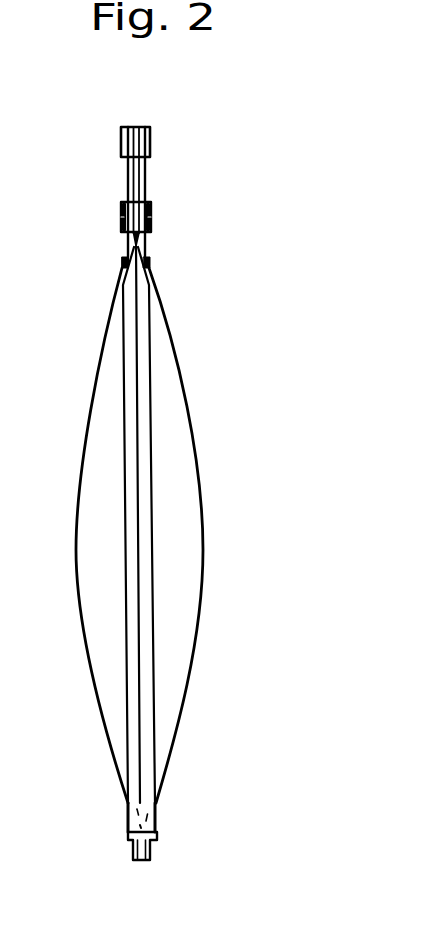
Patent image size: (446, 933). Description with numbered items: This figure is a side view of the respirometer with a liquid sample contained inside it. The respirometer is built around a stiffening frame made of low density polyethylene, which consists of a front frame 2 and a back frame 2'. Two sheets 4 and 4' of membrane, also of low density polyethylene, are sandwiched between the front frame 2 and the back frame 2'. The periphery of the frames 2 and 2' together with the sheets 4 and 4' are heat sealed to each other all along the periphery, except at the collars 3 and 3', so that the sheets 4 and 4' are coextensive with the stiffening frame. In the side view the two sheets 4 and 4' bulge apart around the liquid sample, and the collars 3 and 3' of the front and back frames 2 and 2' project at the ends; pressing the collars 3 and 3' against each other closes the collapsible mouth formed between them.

The front frame 2 is at (178, 841).
The back frame 2' is at (99, 831).
The collar 3 is at (175, 197).
The collar 3' is at (100, 182).
The sheet 4 is at (208, 525).
The sheet 4' is at (70, 524).